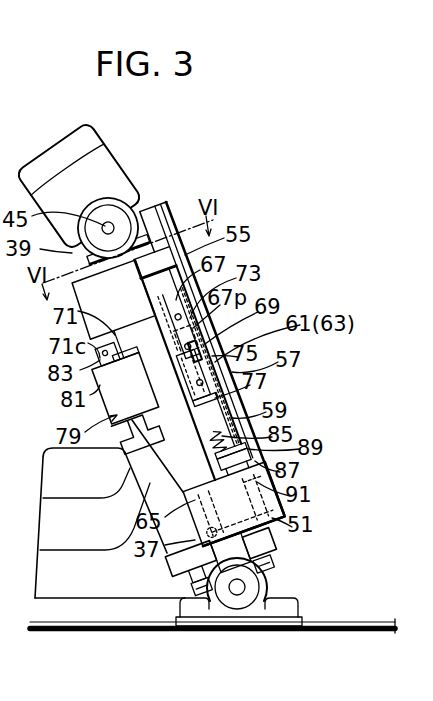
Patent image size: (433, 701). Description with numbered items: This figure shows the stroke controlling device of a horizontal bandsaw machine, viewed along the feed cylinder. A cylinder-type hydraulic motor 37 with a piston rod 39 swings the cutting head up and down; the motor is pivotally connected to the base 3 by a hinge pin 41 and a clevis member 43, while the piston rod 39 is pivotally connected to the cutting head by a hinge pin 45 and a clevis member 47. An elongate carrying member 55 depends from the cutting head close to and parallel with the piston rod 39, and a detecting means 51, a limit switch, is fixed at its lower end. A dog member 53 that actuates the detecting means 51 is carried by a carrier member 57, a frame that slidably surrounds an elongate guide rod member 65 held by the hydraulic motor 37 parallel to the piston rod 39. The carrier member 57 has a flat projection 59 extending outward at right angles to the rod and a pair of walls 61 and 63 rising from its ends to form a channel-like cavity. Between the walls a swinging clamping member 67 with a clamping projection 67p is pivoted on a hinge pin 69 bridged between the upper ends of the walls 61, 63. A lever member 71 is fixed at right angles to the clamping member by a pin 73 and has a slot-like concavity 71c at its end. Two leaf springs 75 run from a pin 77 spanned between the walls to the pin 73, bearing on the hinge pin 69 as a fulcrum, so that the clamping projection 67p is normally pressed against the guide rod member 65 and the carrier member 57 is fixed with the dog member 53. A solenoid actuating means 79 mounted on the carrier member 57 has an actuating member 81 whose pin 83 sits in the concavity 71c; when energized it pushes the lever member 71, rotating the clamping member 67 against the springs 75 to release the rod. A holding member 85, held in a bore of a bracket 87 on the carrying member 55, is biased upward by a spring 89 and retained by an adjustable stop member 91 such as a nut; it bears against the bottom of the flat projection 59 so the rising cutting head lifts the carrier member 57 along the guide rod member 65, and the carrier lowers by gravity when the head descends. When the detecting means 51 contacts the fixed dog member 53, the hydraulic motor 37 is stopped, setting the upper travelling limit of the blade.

The base 3 is at (351, 631).
The hydraulic motor 37 is at (223, 560).
The piston rod 39 is at (118, 250).
The hinge pin 41 is at (238, 592).
The clevis member 43 is at (200, 620).
The hinge pin 45 is at (108, 228).
The clevis member 47 is at (118, 163).
The detecting means 51 is at (244, 531).
The dog member 53 is at (172, 456).
The carrying member 55 is at (200, 334).
The carrier member 57 is at (225, 358).
The flat projection 59 is at (205, 356).
The wall 61 is at (208, 365).
The wall 63 is at (210, 365).
The guide rod member 65 is at (234, 504).
The swinging clamping member 67 is at (164, 287).
The clamping projection 67p is at (182, 331).
The hinge pin 69 is at (186, 339).
The lever member 71 is at (142, 381).
The slot-like concavity 71c is at (107, 354).
The pin 73 is at (168, 325).
The leaf springs 75 is at (193, 375).
The pin 77 is at (206, 399).
The actuating means 79 is at (137, 433).
The actuating member 81 is at (125, 388).
The pin 83 is at (125, 354).
The holding member 85 is at (217, 441).
The bracket 87 is at (235, 462).
The spring 89 is at (231, 451).
The adjustable stop member 91 is at (253, 479).